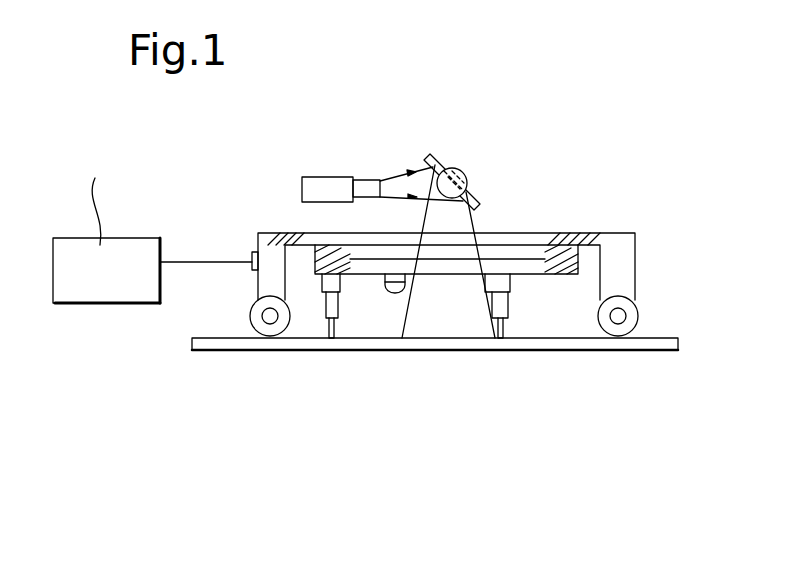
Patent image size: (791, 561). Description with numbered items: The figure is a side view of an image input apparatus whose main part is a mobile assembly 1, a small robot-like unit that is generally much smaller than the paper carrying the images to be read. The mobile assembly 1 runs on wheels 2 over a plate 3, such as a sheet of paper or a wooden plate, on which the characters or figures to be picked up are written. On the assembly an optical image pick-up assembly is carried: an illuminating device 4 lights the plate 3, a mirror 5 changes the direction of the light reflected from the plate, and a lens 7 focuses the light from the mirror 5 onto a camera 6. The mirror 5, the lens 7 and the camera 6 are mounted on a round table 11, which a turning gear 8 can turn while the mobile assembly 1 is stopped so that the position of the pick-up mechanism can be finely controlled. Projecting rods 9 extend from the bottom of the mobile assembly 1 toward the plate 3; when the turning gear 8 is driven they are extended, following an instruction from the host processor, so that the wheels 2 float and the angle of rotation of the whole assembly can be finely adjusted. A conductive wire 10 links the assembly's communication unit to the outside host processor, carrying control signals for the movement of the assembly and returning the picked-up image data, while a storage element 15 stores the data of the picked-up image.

The mobile assembly 1 is at (425, 118).
The wheels 2 is at (250, 315).
The plate 3 is at (680, 342).
The illuminating device 4 is at (385, 291).
The mirror 5 is at (443, 162).
The camera 6 is at (333, 177).
The lens 7 is at (362, 180).
The turning gear 8 is at (545, 233).
The projecting rods 9 is at (332, 338).
The conductive wire 10 is at (255, 252).
The round table 11 is at (499, 244).
The storage element 15 is at (92, 305).